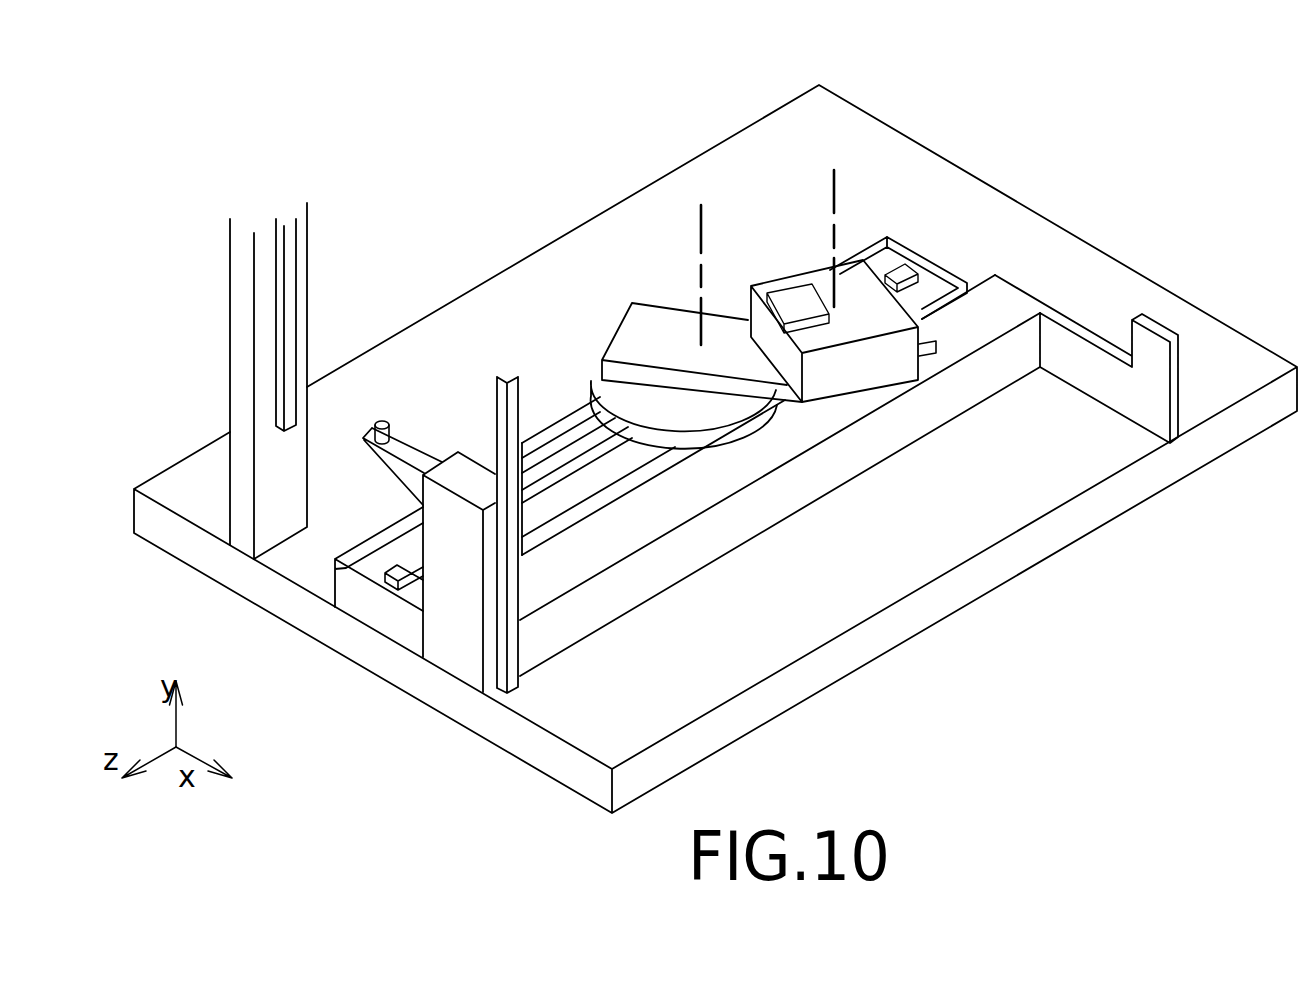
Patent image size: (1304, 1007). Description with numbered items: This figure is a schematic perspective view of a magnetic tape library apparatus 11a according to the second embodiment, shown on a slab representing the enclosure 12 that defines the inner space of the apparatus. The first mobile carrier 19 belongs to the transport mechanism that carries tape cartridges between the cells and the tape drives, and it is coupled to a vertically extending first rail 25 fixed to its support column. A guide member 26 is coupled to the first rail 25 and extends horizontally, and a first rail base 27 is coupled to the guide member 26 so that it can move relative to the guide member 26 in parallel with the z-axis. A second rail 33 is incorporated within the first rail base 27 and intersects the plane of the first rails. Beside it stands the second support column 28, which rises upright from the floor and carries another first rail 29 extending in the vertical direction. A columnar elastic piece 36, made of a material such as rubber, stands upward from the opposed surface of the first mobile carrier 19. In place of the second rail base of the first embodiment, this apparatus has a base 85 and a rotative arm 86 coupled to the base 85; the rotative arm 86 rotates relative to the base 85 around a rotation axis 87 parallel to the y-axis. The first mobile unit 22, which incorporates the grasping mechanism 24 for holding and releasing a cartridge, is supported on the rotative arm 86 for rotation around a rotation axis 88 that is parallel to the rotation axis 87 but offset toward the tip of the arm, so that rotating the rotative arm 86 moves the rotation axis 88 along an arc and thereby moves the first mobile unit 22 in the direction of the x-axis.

The magnetic tape library apparatus 11a is at (402, 139).
The enclosure 12 is at (1218, 453).
The first mobile carrier 19 is at (464, 677).
The first mobile unit 22 is at (866, 258).
The grasping mechanism 24 is at (934, 355).
The first rail 25 is at (512, 658).
The guide member 26 is at (600, 617).
The first rail base 27 is at (365, 622).
The second support column 28 is at (240, 542).
The first rail 29 is at (290, 315).
The second rail 33 is at (398, 568).
The columnar elastic piece 36 is at (380, 422).
The base 85 is at (591, 396).
The rotative arm 86 is at (627, 318).
The rotation axis 87 is at (698, 233).
The rotation axis 88 is at (832, 210).